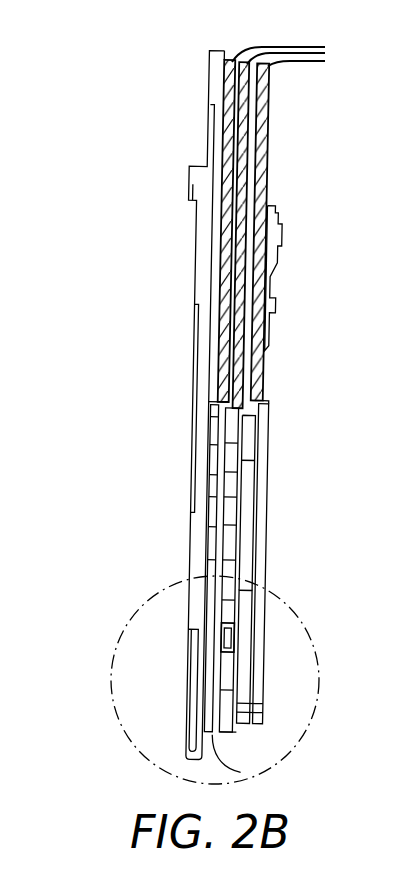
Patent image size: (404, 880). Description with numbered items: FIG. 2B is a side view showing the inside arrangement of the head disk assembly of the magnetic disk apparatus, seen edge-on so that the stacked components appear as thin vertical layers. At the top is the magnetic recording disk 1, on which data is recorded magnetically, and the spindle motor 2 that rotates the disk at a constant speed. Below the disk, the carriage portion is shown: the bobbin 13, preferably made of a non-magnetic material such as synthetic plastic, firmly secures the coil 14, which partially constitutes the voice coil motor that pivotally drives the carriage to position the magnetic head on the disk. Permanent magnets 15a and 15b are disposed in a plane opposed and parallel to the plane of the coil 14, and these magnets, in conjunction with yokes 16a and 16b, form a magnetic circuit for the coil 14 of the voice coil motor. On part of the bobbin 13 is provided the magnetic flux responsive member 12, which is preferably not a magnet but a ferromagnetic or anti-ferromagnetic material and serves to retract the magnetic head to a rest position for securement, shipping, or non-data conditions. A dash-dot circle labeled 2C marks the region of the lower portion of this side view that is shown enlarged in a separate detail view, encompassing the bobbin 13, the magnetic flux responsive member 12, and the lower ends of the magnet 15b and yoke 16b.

The magnetic recording disk 1 is at (282, 57).
The spindle motor 2 is at (276, 285).
The detail region 2C is at (135, 747).
The magnetic flux responsive member 12 is at (222, 633).
The bobbin 13 is at (226, 602).
The coil 14 is at (237, 558).
The permanent magnet 15a is at (247, 503).
The permanent magnet 15b is at (243, 620).
The yoke 16a is at (268, 556).
The yoke 16b is at (222, 772).